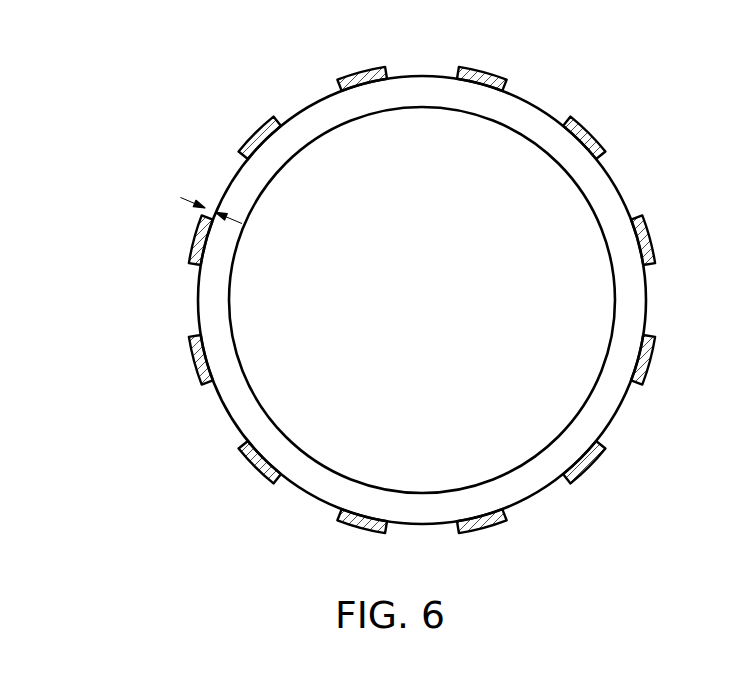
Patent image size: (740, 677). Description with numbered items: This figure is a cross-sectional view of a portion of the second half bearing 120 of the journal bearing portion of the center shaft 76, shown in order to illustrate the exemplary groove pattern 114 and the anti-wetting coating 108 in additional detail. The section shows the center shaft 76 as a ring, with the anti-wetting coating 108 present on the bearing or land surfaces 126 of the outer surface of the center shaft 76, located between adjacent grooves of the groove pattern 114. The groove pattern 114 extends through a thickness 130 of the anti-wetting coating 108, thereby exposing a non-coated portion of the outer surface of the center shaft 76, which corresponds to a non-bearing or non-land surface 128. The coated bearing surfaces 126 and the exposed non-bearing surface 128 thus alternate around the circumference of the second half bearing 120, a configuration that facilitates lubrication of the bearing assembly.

The second half bearing 120 is at (152, 120).
The thickness 130 is at (212, 212).
The anti-wetting coating 108 is at (190, 264).
The groove pattern 114 is at (217, 178).
The bearing surfaces 126 is at (564, 122).
The non-bearing surface 128 is at (617, 198).
The center shaft 76 is at (525, 118).